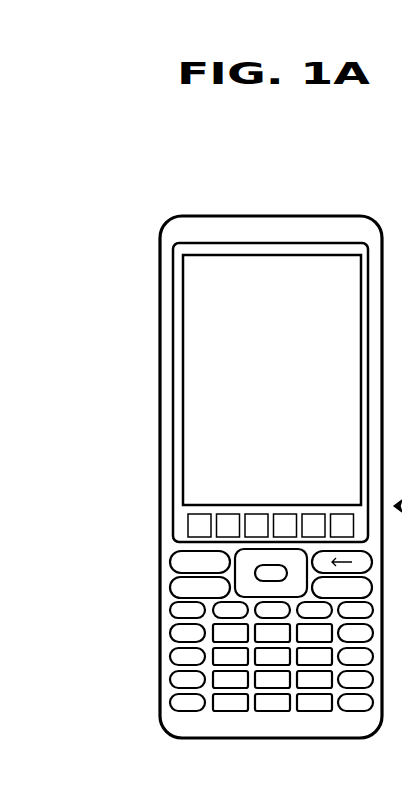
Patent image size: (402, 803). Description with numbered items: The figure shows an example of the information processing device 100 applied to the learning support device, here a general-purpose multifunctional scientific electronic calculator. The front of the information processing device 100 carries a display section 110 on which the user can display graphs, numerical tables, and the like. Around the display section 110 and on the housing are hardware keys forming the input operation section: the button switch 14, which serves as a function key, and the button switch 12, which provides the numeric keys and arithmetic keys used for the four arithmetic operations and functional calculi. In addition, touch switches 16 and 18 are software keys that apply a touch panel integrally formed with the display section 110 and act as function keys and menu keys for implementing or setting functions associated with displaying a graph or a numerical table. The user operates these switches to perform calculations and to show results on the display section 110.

The information processing device 100 is at (345, 190).
The display section 110 is at (235, 263).
The touch switch 18 is at (145, 258).
The touch switch 16 is at (145, 512).
The button switch 14 is at (145, 547).
The button switch 12 is at (145, 602).